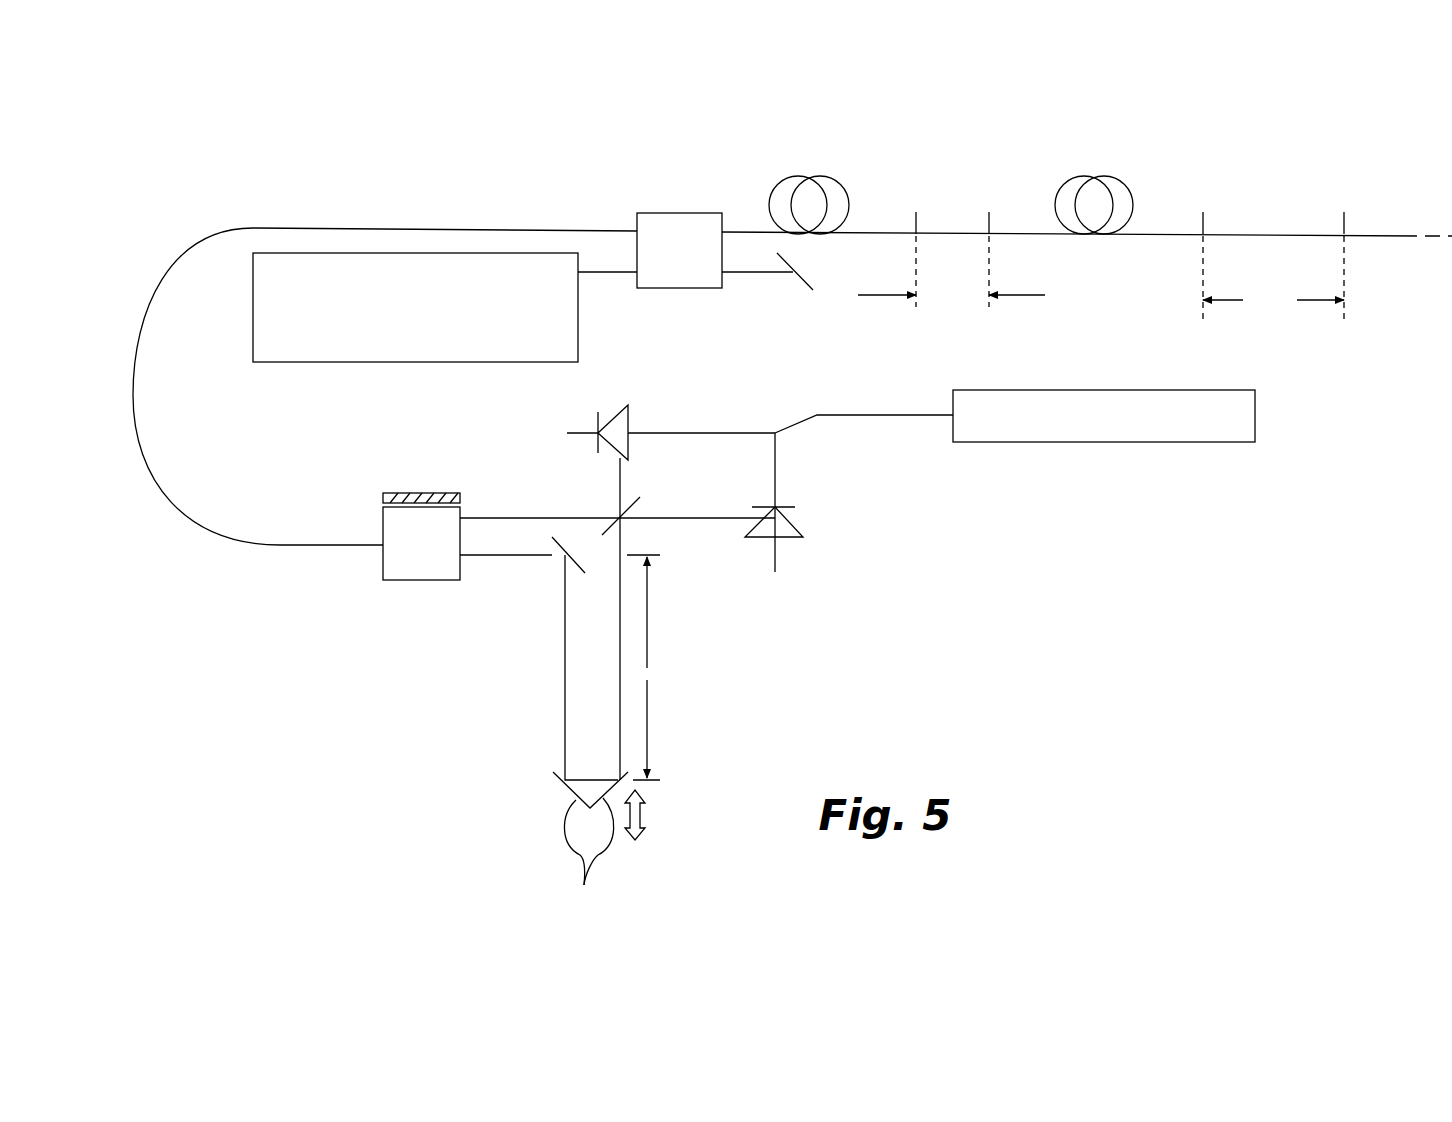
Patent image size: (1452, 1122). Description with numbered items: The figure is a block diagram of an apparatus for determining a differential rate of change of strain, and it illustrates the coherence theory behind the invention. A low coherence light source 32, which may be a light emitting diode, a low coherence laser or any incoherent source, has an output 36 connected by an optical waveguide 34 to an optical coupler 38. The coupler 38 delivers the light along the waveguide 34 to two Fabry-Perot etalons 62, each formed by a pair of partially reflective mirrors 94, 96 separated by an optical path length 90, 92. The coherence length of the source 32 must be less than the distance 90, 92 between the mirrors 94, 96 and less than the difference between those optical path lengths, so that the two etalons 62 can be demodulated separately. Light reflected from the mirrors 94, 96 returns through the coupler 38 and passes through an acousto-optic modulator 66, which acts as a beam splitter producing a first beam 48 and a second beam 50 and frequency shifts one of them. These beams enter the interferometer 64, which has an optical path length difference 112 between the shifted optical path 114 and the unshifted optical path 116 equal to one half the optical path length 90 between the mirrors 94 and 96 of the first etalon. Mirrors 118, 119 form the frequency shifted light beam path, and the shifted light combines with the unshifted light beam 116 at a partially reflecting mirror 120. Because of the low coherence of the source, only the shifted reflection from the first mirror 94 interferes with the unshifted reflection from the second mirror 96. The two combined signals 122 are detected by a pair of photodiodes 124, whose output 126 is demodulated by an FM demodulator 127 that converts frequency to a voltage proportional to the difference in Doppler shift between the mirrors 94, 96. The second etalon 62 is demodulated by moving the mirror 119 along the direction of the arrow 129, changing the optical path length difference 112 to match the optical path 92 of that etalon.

The low coherence light source 32 is at (526, 364).
The optical waveguide 34 is at (267, 545).
The output 36 is at (586, 273).
The optical coupler 38 is at (668, 212).
The first beam 48 is at (492, 556).
The second beam 50 is at (477, 515).
The Fabry-Perot etalon 62 is at (958, 166).
The interferometer 64 is at (666, 599).
The acousto-optic modulator 66 is at (415, 580).
The optical path length 90 is at (951, 278).
The optical path length 92 is at (1273, 246).
The first mirror 94 is at (915, 222).
The second mirror 96 is at (992, 220).
The optical path length difference 112 is at (654, 667).
The shifted optical path 114 is at (548, 557).
The unshifted optical path 116 is at (578, 516).
The mirror 118 is at (570, 535).
The mirror 119 is at (590, 847).
The partially reflecting mirror 120 is at (633, 495).
The combined signal 122 is at (620, 475).
The photodiode 124 is at (620, 408).
The output 126 is at (775, 430).
The FM demodulator 127 is at (962, 388).
The arrow 129 is at (645, 816).